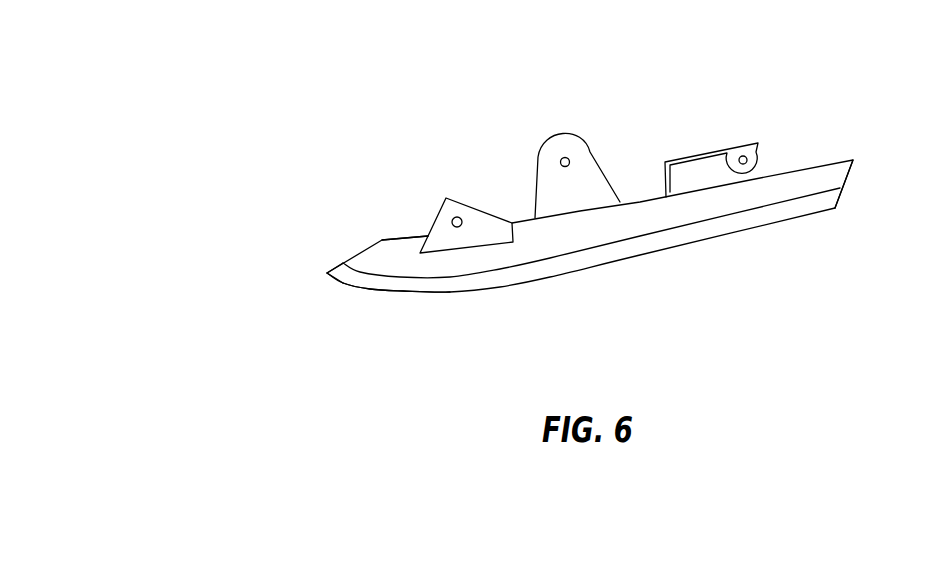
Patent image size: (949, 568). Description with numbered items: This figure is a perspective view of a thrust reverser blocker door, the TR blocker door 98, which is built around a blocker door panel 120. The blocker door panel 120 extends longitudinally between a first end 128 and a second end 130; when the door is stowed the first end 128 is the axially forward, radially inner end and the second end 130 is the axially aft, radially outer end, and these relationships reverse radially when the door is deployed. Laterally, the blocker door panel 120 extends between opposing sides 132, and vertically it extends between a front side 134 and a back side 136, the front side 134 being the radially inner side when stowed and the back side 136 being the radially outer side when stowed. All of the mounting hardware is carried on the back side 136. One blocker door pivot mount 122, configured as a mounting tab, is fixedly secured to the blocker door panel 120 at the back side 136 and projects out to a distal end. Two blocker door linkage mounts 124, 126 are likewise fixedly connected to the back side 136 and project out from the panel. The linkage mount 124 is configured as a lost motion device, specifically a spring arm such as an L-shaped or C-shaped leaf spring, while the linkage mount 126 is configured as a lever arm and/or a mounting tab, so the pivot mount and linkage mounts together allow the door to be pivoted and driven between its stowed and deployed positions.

The TR blocker door 98 is at (541, 74).
The blocker door panel 120 is at (609, 280).
The blocker door pivot mount 122 is at (466, 195).
The blocker door linkage mount 124 is at (725, 136).
The blocker door linkage mount 126 is at (599, 141).
The first end 128 is at (333, 268).
The second end 130 is at (851, 173).
The opposing sides 132 is at (458, 284).
The front side 134 is at (402, 294).
The back side 136 is at (390, 255).